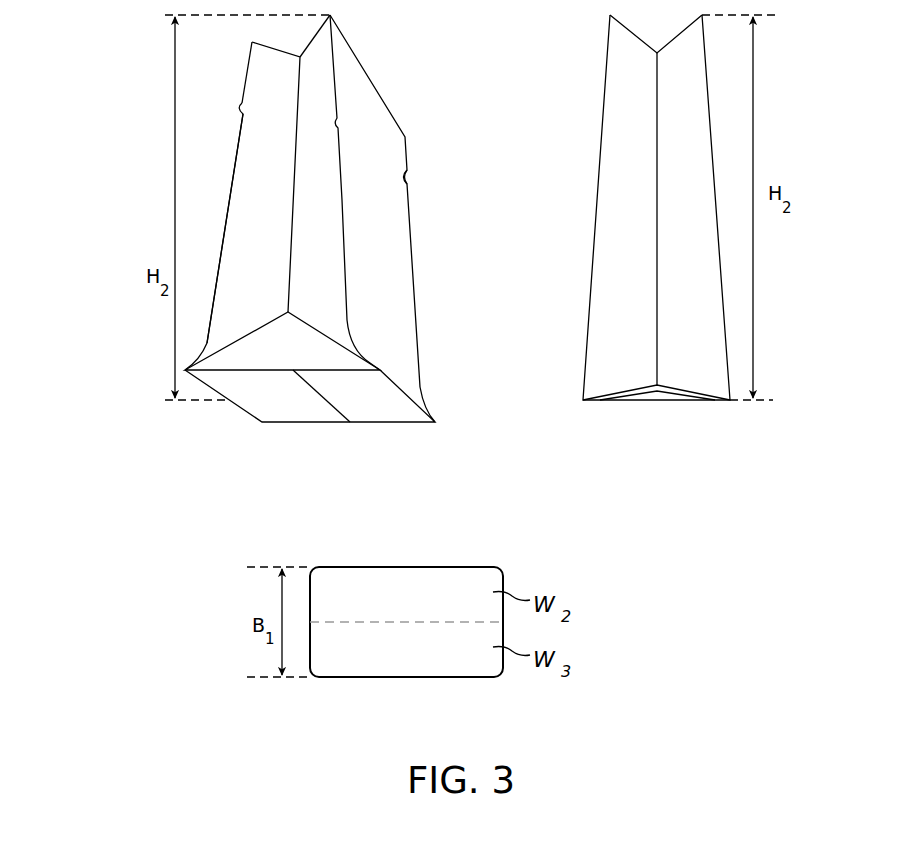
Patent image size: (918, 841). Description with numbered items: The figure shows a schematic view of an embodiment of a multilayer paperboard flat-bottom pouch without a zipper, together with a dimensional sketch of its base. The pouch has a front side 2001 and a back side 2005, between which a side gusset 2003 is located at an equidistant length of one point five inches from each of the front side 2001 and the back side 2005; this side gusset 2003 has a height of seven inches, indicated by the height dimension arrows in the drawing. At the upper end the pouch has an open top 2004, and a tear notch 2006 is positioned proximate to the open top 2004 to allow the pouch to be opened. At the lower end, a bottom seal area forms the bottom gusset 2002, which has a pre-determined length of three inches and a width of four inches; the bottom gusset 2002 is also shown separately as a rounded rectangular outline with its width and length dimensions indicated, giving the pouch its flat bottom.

The front side 2001 is at (390, 278).
The bottom gusset 2002 is at (353, 385).
The side gusset 2003 is at (282, 162).
The open top 2004 is at (360, 56).
The back side 2005 is at (222, 227).
The tear notch 2006 is at (414, 177).